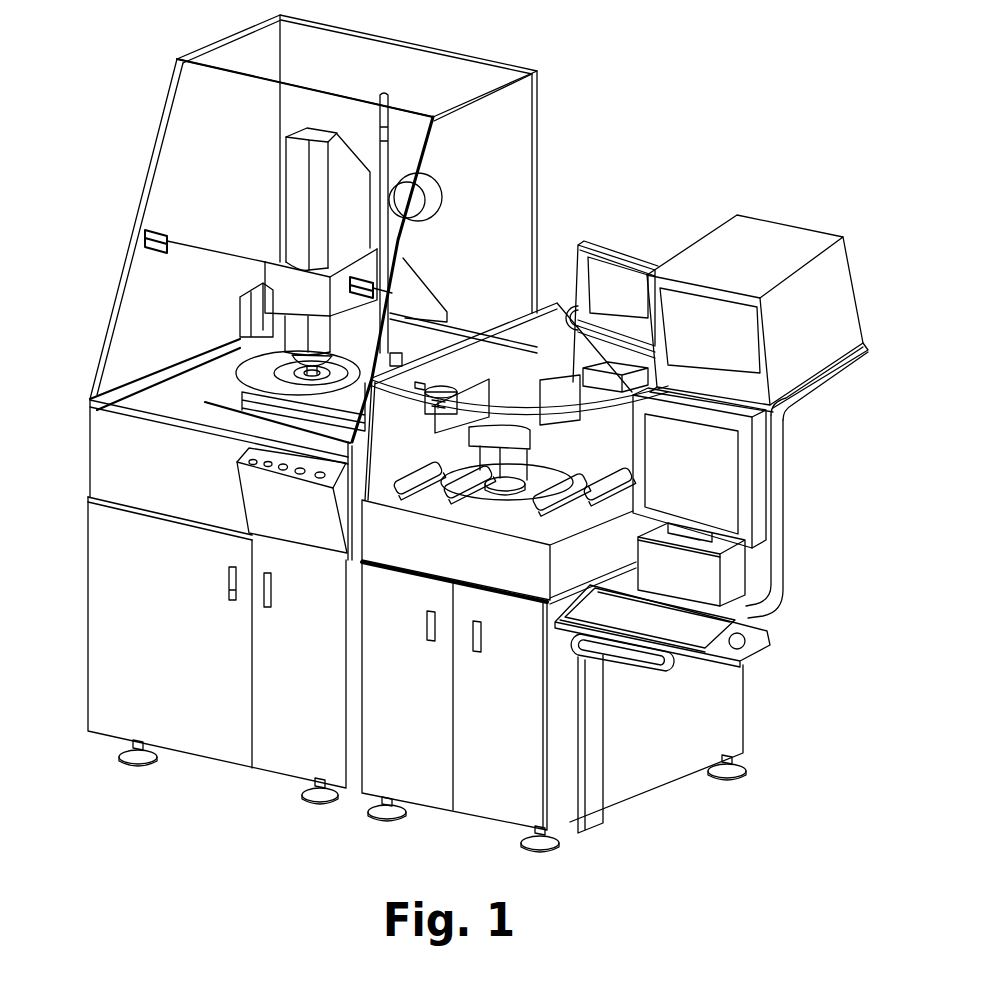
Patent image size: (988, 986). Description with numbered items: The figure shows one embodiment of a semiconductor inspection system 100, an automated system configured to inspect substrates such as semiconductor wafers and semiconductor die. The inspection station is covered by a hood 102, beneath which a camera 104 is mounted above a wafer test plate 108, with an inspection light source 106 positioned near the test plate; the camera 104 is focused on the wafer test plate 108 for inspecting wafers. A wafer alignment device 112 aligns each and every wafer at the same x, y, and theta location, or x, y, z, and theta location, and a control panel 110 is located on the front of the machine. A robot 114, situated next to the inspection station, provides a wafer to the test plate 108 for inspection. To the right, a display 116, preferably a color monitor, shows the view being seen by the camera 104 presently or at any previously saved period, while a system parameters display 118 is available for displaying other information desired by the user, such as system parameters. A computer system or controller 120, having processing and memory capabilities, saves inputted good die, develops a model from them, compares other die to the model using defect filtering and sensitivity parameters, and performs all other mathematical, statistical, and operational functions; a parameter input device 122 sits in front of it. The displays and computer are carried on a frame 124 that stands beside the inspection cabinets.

The semiconductor inspection system 100 is at (592, 78).
The hood 102 is at (518, 194).
The camera 104 is at (297, 182).
The inspection light source 106 is at (290, 333).
The wafer test plate 108 is at (250, 373).
The control panel 110 is at (262, 497).
The wafer alignment device 112 is at (128, 398).
The robot 114 is at (507, 423).
The display 116 is at (840, 303).
The system parameters display 118 is at (760, 470).
The computer system or controller 120 is at (770, 567).
The parameter input device 122 is at (775, 603).
The frame 124 is at (617, 780).